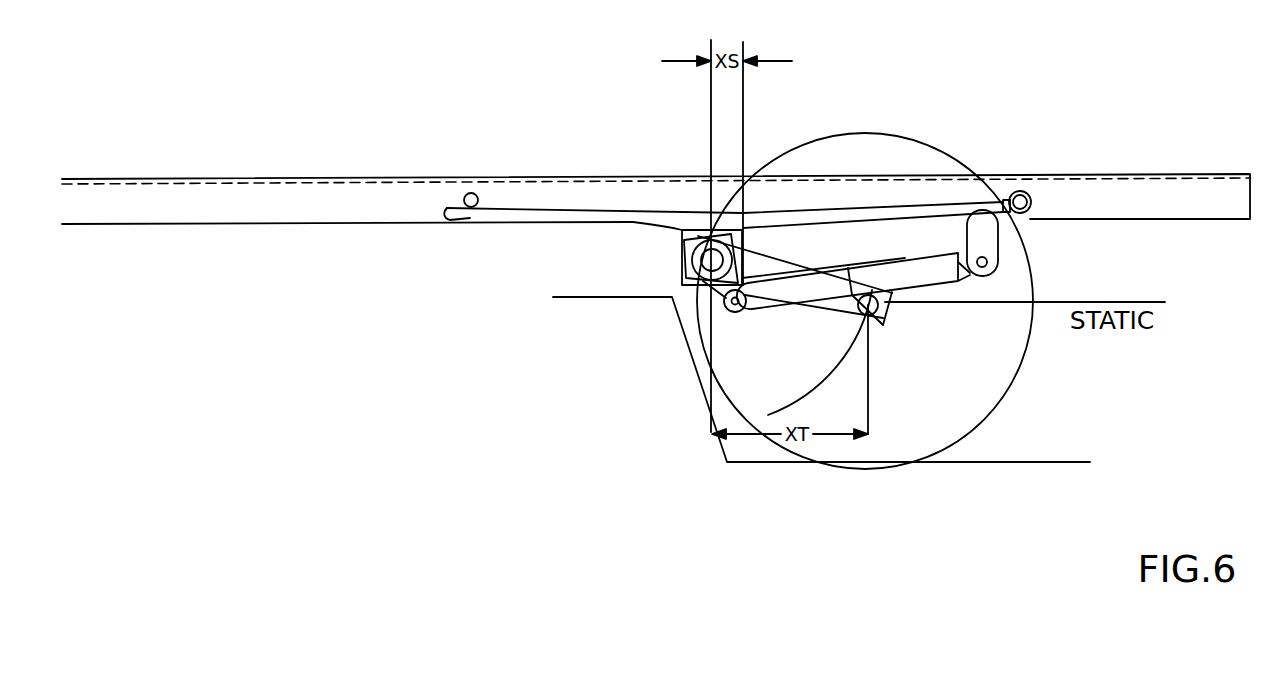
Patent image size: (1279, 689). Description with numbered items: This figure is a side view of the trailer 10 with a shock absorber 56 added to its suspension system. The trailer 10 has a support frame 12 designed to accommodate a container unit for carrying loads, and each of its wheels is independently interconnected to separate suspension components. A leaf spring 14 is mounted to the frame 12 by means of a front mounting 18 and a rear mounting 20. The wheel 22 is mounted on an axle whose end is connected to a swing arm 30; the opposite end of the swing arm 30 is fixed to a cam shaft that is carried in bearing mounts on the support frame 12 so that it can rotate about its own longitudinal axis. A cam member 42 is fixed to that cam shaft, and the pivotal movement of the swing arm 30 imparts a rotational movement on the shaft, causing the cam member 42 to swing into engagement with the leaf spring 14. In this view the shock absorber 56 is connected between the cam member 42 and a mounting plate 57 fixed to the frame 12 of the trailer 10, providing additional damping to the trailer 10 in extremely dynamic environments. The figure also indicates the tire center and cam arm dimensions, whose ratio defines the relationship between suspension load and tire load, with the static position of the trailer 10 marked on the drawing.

The trailer 10 is at (235, 335).
The support frame 12 is at (167, 200).
The leaf spring 14 is at (623, 222).
The front mounting 18 is at (487, 197).
The rear mounting 20 is at (1017, 198).
The wheel 22 is at (993, 373).
The swing arm 30 is at (847, 307).
The cam member 42 is at (750, 240).
The shock absorber 56 is at (915, 282).
The mounting plate 57 is at (982, 245).